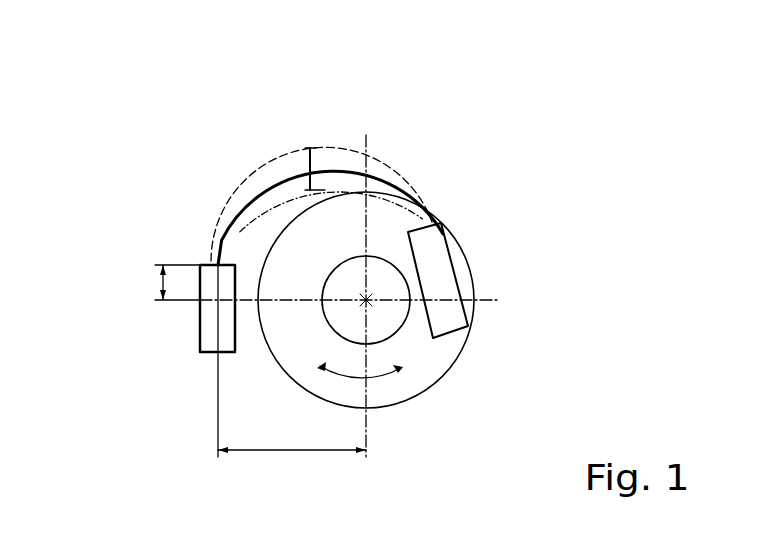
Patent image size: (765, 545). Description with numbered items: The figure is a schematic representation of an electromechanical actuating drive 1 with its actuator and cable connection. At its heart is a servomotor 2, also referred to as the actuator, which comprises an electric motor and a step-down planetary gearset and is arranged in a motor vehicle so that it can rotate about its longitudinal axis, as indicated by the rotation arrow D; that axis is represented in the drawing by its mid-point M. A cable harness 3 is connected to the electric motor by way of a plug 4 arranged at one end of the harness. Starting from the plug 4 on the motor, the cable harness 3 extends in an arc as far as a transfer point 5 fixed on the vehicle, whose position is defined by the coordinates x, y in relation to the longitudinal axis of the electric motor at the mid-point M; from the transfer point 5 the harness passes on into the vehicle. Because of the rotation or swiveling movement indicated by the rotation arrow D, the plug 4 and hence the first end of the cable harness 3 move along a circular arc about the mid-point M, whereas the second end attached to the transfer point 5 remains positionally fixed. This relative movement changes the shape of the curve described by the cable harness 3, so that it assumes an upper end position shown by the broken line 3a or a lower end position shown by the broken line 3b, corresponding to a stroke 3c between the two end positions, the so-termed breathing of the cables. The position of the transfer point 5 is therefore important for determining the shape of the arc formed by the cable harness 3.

The electromechanical actuating drive 1 is at (411, 150).
The servomotor 2 is at (463, 250).
The cable harness 3 is at (258, 193).
The upper end position 3a is at (280, 157).
The lower end position 3b is at (229, 220).
The stroke 3c is at (343, 147).
The plug 4 is at (470, 272).
The transfer point 5 is at (200, 328).
The mid-point M is at (367, 302).
The rotation arrow D is at (387, 380).
The coordinate x is at (292, 437).
The coordinate y is at (171, 282).